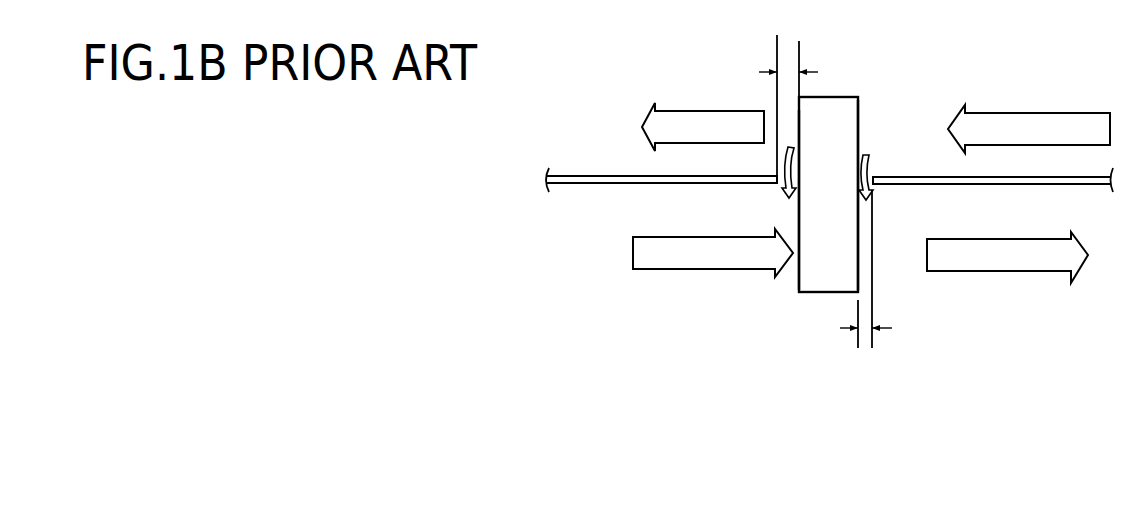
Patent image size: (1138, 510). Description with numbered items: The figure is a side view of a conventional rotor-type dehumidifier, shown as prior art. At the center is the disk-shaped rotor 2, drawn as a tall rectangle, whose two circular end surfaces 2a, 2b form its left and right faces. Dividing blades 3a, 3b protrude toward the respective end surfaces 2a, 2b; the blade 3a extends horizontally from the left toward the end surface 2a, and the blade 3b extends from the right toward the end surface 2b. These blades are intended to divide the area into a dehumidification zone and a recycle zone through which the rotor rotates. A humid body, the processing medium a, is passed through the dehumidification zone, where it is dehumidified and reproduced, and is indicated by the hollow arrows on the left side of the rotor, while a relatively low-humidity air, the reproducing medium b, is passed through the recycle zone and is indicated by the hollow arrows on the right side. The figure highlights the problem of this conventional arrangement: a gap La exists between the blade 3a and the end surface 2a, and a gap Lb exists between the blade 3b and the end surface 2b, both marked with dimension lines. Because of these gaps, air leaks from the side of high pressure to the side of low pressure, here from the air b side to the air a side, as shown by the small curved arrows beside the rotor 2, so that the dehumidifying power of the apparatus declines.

The disk-shaped rotor 2 is at (847, 94).
The circular end surface 2a is at (799, 282).
The circular end surface 2b is at (859, 118).
The dividing blade 3a is at (591, 175).
The dividing blade 3b is at (910, 177).
The gap La is at (790, 68).
The gap Lb is at (868, 336).
The processing medium a is at (697, 190).
The reproducing medium b is at (1030, 194).